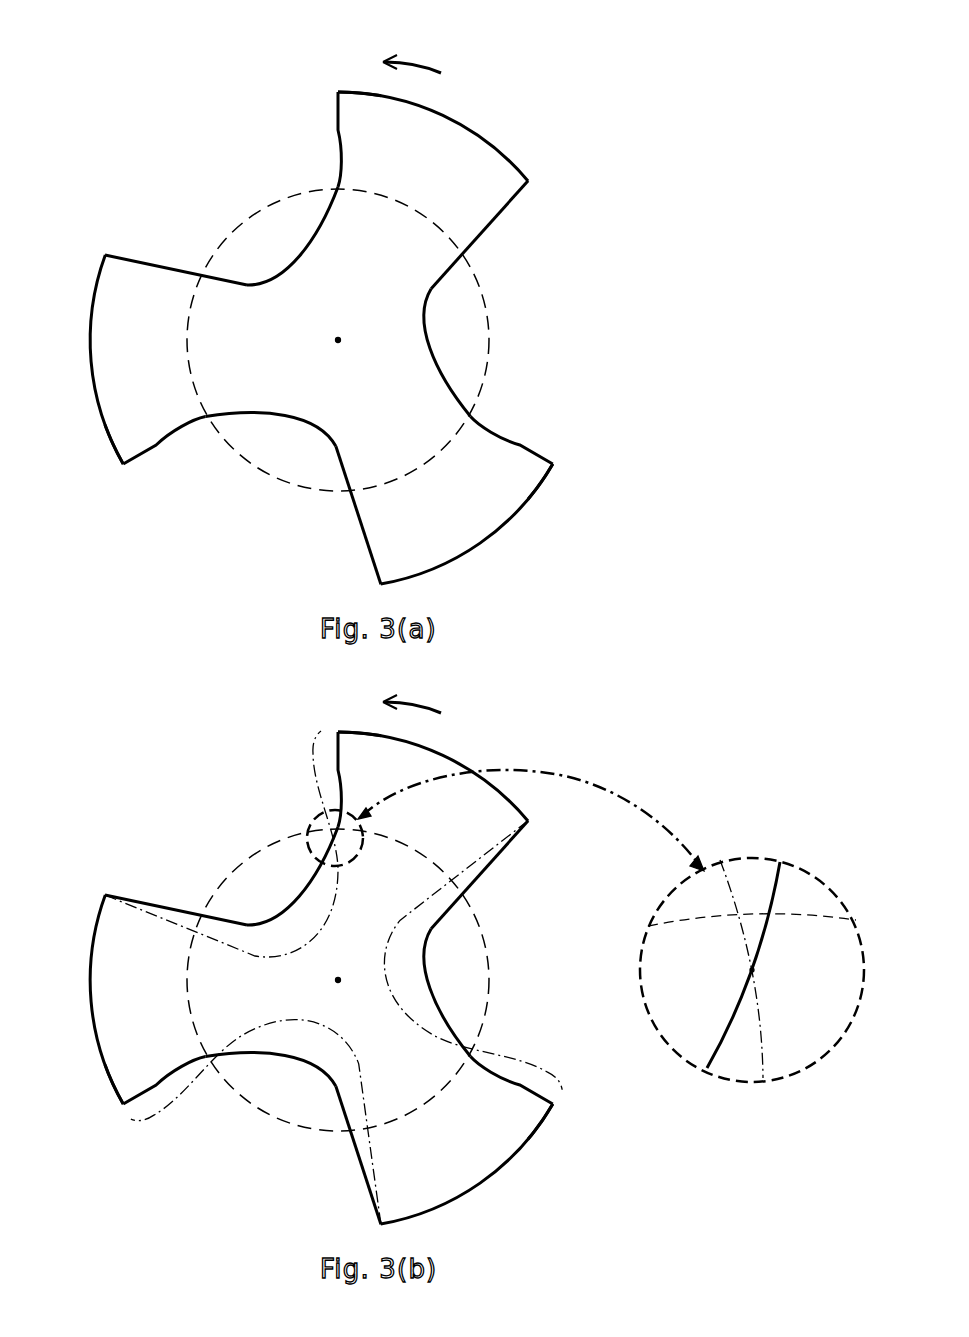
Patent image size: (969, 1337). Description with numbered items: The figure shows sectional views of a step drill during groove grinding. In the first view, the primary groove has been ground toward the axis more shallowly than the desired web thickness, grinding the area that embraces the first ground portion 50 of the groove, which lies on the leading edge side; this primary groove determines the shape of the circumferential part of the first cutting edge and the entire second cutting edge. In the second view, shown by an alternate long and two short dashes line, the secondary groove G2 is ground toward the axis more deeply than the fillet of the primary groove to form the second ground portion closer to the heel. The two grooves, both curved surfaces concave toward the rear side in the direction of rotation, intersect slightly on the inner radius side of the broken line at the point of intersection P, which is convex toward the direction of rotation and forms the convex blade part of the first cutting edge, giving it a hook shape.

The first ground portion 50 is at (343, 290).
The secondary groove G2 is at (320, 735).
The point of intersection P is at (758, 969).